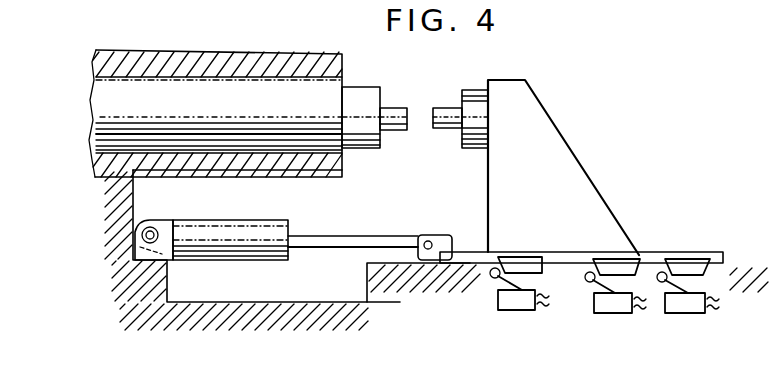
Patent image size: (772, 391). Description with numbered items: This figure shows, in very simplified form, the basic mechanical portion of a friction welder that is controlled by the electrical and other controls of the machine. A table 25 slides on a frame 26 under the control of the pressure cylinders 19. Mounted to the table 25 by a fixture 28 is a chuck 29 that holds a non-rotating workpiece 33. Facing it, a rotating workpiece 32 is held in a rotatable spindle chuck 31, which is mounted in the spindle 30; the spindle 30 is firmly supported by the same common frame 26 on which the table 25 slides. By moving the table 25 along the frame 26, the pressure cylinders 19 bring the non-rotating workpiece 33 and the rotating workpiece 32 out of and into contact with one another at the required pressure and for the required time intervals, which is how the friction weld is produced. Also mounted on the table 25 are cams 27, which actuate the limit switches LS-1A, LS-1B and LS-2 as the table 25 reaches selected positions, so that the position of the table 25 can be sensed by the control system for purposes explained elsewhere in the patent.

The pressure cylinders 19 is at (220, 232).
The table 25 is at (720, 258).
The frame 26 is at (318, 311).
The cams 27 is at (610, 262).
The fixture 28 is at (553, 140).
The chuck 29 is at (476, 138).
The spindle 30 is at (201, 72).
The rotatable spindle chuck 31 is at (357, 95).
The rotating workpiece 32 is at (395, 127).
The non-rotating workpiece 33 is at (450, 113).
The limit switch LS-1A is at (512, 305).
The limit switch LS-1B is at (613, 308).
The limit switch LS-2 is at (680, 308).